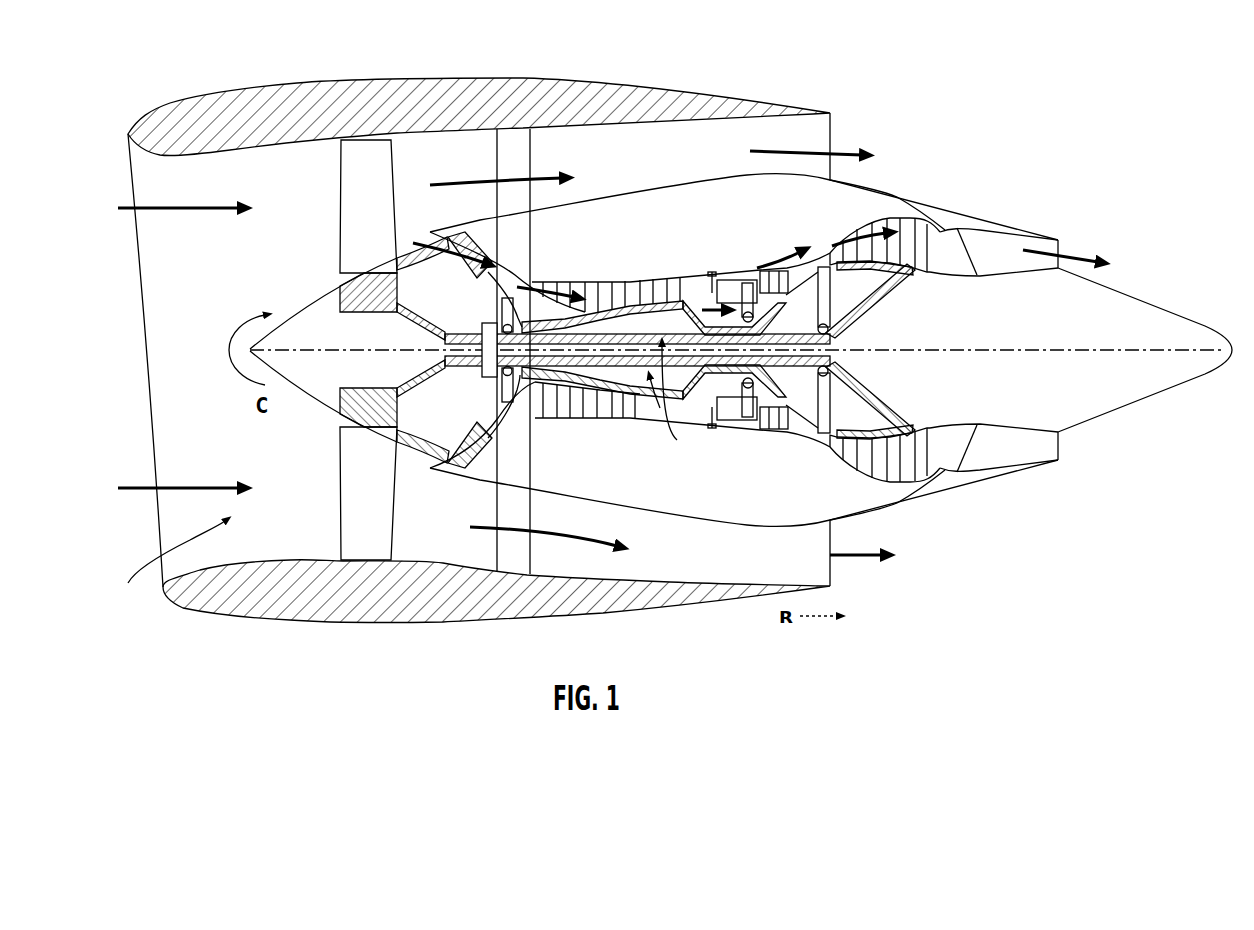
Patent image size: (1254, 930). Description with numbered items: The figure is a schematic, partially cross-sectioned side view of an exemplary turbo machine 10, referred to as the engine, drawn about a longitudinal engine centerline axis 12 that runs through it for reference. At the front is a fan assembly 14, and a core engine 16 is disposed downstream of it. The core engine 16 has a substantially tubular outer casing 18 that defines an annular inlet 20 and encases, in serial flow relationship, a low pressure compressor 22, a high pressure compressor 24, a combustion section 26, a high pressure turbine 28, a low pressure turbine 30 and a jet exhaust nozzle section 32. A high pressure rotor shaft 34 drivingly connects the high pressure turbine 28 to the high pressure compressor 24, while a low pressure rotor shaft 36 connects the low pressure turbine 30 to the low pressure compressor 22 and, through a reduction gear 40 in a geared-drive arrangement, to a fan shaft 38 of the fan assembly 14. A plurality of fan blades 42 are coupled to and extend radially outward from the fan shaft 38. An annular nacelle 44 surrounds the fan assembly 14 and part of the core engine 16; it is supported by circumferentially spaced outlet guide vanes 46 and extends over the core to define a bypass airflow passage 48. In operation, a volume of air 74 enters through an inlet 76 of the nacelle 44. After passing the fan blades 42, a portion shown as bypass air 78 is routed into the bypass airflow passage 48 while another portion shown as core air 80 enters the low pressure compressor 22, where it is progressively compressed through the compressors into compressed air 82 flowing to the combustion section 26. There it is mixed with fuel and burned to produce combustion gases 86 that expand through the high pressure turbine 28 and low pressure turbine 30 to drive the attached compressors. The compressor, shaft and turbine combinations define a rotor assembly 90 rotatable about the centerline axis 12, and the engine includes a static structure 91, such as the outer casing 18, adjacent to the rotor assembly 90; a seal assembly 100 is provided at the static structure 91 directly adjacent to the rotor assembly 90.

The turbo machine 10 is at (978, 100).
The engine centerline axis 12 is at (998, 349).
The fan assembly 14 is at (420, 150).
The core engine 16 is at (727, 165).
The outer casing 18 is at (687, 514).
The annular inlet 20 is at (437, 452).
The low pressure compressor 22 is at (484, 432).
The high pressure compressor 24 is at (562, 410).
The combustion section 26 is at (713, 420).
The high pressure turbine 28 is at (786, 428).
The low pressure turbine 30 is at (921, 492).
The jet exhaust nozzle section 32 is at (983, 470).
The high pressure rotor shaft 34 is at (772, 323).
The low pressure rotor shaft 36 is at (870, 303).
The fan shaft 38 is at (398, 314).
The reduction gear 40 is at (485, 312).
The fan blades 42 is at (357, 179).
The nacelle 44 is at (346, 78).
The outlet guide vanes 46 is at (517, 160).
The bypass airflow passage 48 is at (655, 170).
The air 74 is at (163, 207).
The inlet 76 is at (165, 564).
The bypass air 78 is at (481, 181).
The core air 80 is at (423, 242).
The compressed air 82 is at (540, 277).
The combustion gases 86 is at (772, 270).
The rotor assembly 90 is at (676, 399).
The static structure 91 is at (943, 217).
The seal assembly 100 is at (926, 204).